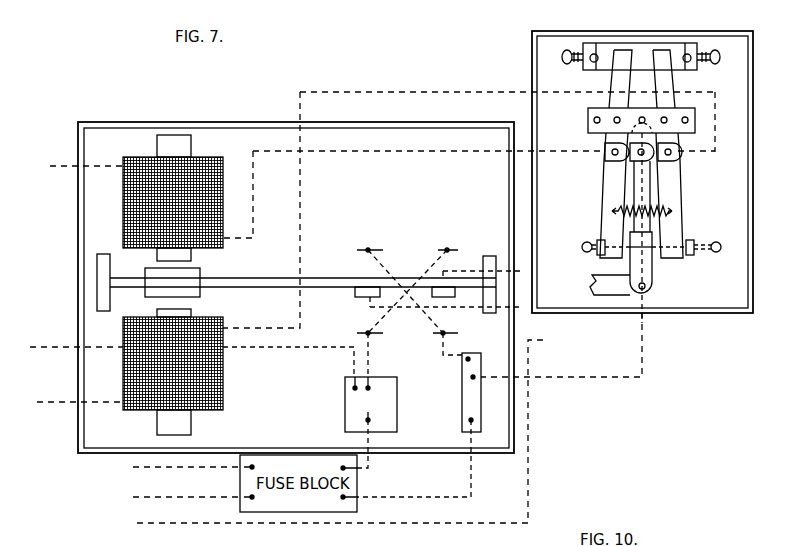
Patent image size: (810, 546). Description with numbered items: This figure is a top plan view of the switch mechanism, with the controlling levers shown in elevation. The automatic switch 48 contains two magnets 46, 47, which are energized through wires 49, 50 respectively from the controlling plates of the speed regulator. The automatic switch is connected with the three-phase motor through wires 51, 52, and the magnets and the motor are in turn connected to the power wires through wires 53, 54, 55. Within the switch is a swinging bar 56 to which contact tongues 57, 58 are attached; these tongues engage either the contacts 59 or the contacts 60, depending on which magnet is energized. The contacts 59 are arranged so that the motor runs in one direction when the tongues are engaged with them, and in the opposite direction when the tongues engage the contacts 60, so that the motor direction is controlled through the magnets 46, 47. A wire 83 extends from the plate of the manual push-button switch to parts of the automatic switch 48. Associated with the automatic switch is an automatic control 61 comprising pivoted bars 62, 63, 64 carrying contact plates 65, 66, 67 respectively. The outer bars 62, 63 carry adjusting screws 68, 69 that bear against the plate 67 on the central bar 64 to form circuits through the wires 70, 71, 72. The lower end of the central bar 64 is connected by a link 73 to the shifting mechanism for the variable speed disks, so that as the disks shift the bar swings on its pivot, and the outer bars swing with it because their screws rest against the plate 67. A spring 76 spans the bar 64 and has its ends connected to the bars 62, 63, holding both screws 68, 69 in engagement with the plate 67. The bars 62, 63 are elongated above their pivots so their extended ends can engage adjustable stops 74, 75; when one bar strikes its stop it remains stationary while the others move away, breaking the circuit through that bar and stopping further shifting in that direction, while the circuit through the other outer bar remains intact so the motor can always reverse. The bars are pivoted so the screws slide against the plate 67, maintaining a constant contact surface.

The magnet 46 is at (213, 163).
The magnet 47 is at (224, 388).
The automatic switch 48 is at (78, 240).
The wire 49 is at (62, 168).
The wire 50 is at (54, 402).
The wire 51 is at (499, 263).
The wire 52 is at (474, 310).
The wire 53 is at (212, 468).
The wire 54 is at (212, 498).
The wire 55 is at (225, 523).
The swinging bar 56 is at (253, 284).
The contact tongue 57 is at (445, 294).
The contact tongue 58 is at (358, 298).
The contacts 59 is at (443, 250).
The contacts 60 is at (443, 335).
The automatic control 61 is at (557, 70).
The pivoted bar 62 is at (615, 82).
The pivoted bar 63 is at (666, 86).
The pivot bar 64 is at (645, 278).
The contact plate 65 is at (604, 190).
The contact plate 66 is at (682, 184).
The contact plate 67 is at (637, 250).
The adjusting screw 68 is at (586, 243).
The adjusting screw 69 is at (702, 249).
The wire 70 is at (484, 151).
The wire 71 is at (479, 92).
The wire 72 is at (619, 378).
The link 73 is at (590, 288).
The adjustable stop 74 is at (597, 55).
The adjustable stop 75 is at (686, 55).
The spring 76 is at (674, 211).
The wire 83 is at (52, 338).